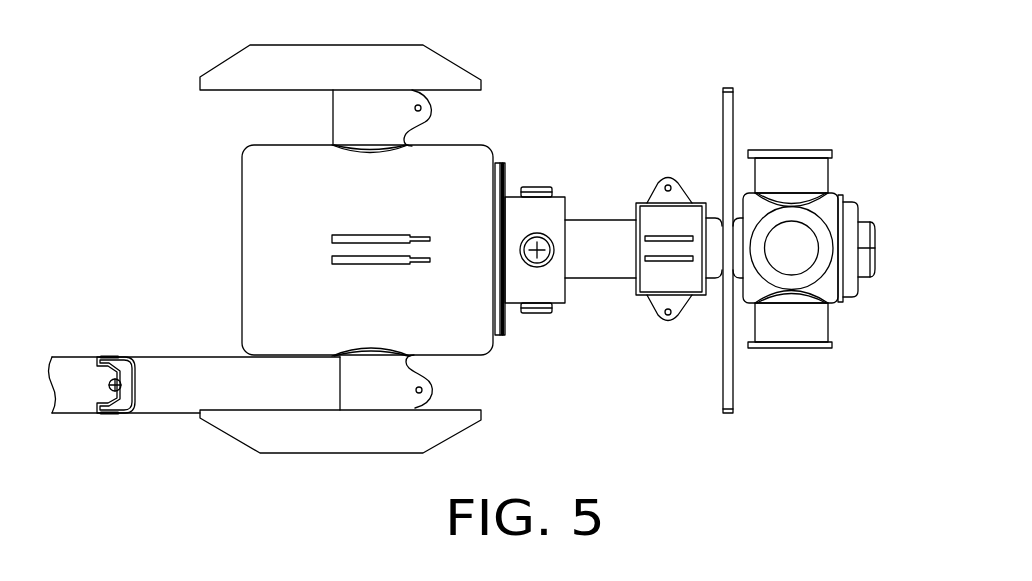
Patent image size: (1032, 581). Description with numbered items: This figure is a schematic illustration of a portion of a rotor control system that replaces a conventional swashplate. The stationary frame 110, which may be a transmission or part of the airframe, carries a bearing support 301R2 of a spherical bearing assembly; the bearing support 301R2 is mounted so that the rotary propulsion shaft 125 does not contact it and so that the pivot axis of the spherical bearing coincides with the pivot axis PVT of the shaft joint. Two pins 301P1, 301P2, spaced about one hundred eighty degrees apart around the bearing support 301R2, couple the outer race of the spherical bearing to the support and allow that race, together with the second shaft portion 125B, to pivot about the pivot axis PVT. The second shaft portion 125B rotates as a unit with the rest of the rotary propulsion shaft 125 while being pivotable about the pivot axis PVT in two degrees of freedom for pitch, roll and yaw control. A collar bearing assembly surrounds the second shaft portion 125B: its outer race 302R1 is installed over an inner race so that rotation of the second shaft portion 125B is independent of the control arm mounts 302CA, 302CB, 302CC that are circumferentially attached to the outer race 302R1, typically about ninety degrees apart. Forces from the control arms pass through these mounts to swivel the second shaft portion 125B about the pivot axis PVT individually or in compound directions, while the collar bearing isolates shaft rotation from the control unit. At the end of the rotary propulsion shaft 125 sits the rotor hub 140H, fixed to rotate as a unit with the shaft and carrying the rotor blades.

The stationary frame 110 is at (243, 150).
The bearing support 301R2 is at (508, 196).
The pin 301P1 is at (538, 186).
The pin 301P2 is at (537, 313).
The pivot axis PVT is at (540, 248).
The second shaft portion 125B is at (578, 260).
The outer race 302R1 is at (696, 292).
The control arm mount 302CB is at (670, 240).
The control arm mount 302CA is at (670, 177).
The control arm mount 302CC is at (673, 318).
The rotary propulsion shaft 125 is at (735, 396).
The rotor hub 140H is at (855, 124).